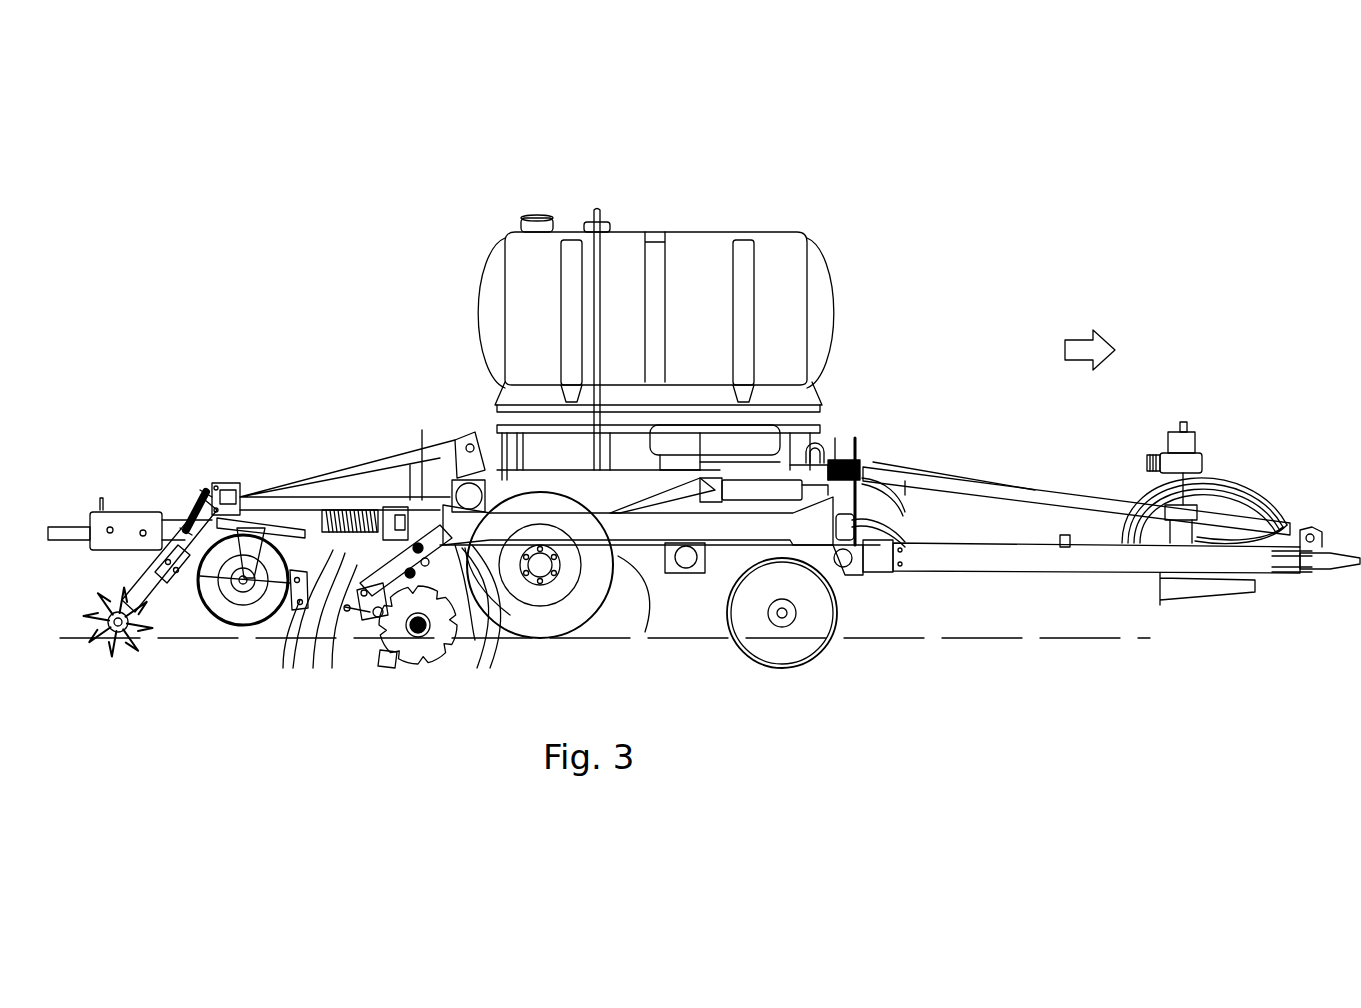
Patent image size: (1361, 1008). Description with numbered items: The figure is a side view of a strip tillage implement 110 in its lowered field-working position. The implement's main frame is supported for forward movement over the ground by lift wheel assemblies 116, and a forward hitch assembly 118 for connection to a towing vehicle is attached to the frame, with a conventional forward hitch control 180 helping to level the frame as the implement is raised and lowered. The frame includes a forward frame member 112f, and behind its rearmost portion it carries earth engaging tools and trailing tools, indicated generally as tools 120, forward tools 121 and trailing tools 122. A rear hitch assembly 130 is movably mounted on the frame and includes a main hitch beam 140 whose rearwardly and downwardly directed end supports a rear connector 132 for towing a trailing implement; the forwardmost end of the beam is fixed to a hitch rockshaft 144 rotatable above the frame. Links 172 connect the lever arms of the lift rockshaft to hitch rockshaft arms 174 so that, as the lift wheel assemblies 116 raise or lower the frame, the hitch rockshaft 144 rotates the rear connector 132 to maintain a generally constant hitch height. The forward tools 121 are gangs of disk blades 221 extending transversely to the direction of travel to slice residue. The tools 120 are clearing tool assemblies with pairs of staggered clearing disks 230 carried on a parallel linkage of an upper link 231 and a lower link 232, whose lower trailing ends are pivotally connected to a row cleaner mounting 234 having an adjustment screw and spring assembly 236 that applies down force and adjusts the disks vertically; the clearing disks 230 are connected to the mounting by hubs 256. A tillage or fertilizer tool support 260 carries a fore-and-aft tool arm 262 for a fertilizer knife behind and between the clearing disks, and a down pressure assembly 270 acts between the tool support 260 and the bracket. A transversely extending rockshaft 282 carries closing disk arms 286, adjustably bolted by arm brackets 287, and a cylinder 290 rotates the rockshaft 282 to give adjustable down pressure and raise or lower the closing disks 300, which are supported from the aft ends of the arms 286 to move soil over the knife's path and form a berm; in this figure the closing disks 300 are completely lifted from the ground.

The strip tillage implement 110 is at (975, 283).
The forward frame member 112f is at (907, 513).
The lift wheel assemblies 116 is at (652, 602).
The forward hitch assembly 118 is at (1320, 525).
The clearing tool assemblies 120 is at (385, 665).
The forward tools 121 is at (850, 616).
The trailing tools 122 is at (150, 666).
The rear hitch assembly 130 is at (287, 465).
The rear connector 132 is at (56, 522).
The main hitch beam 140 is at (168, 505).
The hitch rockshaft 144 is at (457, 480).
The links 172 is at (530, 465).
The hitch rockshaft arms 174 is at (462, 438).
The forward hitch control 180 is at (873, 482).
The disk blades 221 is at (808, 657).
The clearing disks 230 is at (417, 650).
The upper link 231 is at (285, 615).
The lower link 232 is at (470, 628).
The row cleaner mounting 234 is at (356, 618).
The adjustment screw and spring assembly 236 is at (330, 612).
The hubs 256 is at (432, 650).
The tillage or fertilizer tool support 260 is at (283, 620).
The tool arm 262 is at (287, 633).
The down pressure assembly 270 is at (356, 512).
The rockshaft 282 is at (493, 597).
The closing disk arms 286 is at (292, 528).
The arm brackets 287 is at (380, 518).
The cylinder 290 is at (520, 530).
The closing disks 300 is at (200, 606).